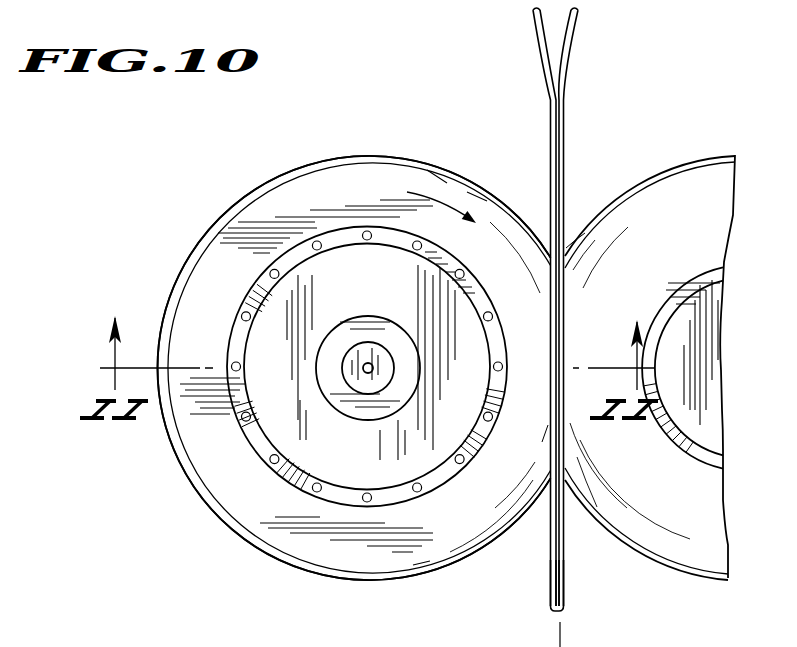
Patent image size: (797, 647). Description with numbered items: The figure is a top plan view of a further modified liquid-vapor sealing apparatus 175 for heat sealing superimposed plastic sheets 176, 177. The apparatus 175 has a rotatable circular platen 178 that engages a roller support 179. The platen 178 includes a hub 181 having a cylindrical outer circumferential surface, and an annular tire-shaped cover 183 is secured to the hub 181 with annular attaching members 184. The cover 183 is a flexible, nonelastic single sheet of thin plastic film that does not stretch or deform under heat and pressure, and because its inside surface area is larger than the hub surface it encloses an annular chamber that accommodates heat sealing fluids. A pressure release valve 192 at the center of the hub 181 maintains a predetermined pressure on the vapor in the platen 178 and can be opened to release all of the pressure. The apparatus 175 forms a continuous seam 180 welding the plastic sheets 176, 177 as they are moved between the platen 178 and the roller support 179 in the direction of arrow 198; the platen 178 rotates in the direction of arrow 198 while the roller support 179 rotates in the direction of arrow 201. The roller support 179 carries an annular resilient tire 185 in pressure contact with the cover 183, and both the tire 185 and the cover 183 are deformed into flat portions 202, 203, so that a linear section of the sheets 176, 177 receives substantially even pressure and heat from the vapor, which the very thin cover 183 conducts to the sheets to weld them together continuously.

The liquid-vapor sealing apparatus 175 is at (368, 126).
The plastic sheet 176 is at (546, 73).
The plastic sheet 177 is at (564, 146).
The rotatable circular platen 178 is at (279, 214).
The roller support 179 is at (697, 148).
The continuous seam 180 is at (566, 575).
The hub 181 is at (288, 428).
The annular tire-shaped cover 183 is at (240, 498).
The annular attaching members 184 is at (258, 290).
The annular resilient tire 185 is at (700, 556).
The pressure release valve 192 is at (386, 406).
The arrow 198 is at (560, 633).
The arrow 201 is at (639, 234).
The flat portion 202 is at (567, 337).
The flat portion 203 is at (543, 408).